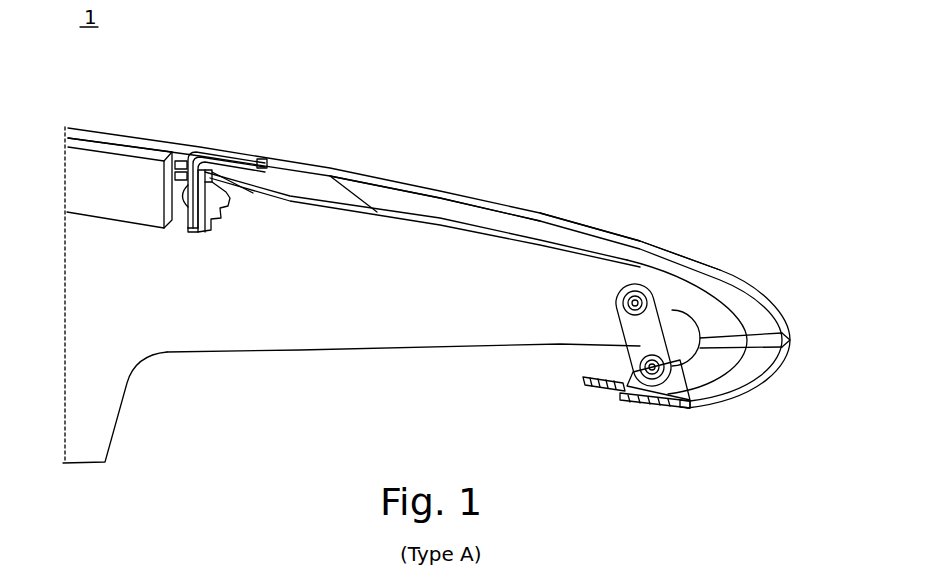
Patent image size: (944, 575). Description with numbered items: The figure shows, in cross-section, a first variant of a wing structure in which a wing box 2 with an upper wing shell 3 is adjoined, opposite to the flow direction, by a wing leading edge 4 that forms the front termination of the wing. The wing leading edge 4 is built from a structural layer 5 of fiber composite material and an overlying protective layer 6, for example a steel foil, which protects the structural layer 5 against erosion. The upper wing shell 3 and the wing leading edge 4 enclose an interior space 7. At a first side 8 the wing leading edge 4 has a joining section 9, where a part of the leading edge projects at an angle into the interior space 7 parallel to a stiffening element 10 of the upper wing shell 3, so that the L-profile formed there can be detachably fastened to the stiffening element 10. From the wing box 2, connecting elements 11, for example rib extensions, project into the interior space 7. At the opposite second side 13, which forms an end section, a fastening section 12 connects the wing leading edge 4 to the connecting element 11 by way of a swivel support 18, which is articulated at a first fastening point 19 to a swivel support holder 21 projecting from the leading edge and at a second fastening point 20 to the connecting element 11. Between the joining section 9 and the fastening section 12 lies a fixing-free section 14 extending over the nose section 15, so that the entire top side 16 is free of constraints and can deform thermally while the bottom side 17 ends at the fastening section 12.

The wing box 2 is at (80, 128).
The upper wing shell 3 is at (122, 142).
The wing leading edge 4 is at (373, 172).
The structural layer 5 is at (568, 228).
The protective layer 6 is at (493, 200).
The interior space 7 is at (437, 350).
The first side of the wing leading edge 8 is at (200, 234).
The joining section 9 is at (225, 152).
The stiffening element 10 is at (190, 232).
The connecting element 11 is at (348, 325).
The fastening section 12 is at (633, 405).
The second side of the wing leading edge 13 is at (597, 392).
The fixing-free section 14 is at (440, 190).
The nose section 15 is at (793, 338).
The top side of the wing leading edge 16 is at (704, 317).
The bottom side of the wing leading edge 17 is at (683, 406).
The swivel support 18 is at (620, 367).
The first fastening point 19 is at (660, 407).
The second fastening point 20 is at (640, 285).
The swivel support holder 21 is at (642, 402).